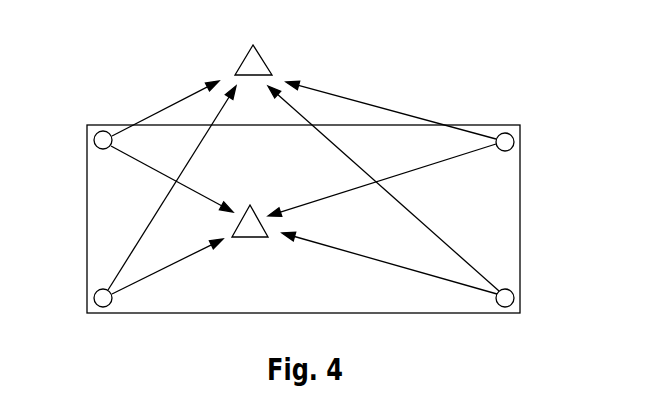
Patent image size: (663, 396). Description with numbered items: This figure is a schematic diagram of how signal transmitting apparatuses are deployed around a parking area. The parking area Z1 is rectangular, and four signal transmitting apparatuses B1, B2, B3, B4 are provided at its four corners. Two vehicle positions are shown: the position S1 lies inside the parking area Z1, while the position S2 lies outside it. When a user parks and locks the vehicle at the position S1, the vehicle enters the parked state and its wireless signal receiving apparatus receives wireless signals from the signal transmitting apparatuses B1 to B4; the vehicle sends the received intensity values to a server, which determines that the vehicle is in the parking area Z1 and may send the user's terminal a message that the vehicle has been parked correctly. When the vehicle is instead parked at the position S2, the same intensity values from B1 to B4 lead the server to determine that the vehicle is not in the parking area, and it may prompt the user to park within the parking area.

The signal transmitting apparatus B1 is at (82, 139).
The signal transmitting apparatus B2 is at (82, 298).
The signal transmitting apparatus B3 is at (523, 140).
The signal transmitting apparatus B4 is at (523, 298).
The position S1 is at (250, 206).
The position S2 is at (267, 58).
The parking area Z1 is at (303, 219).